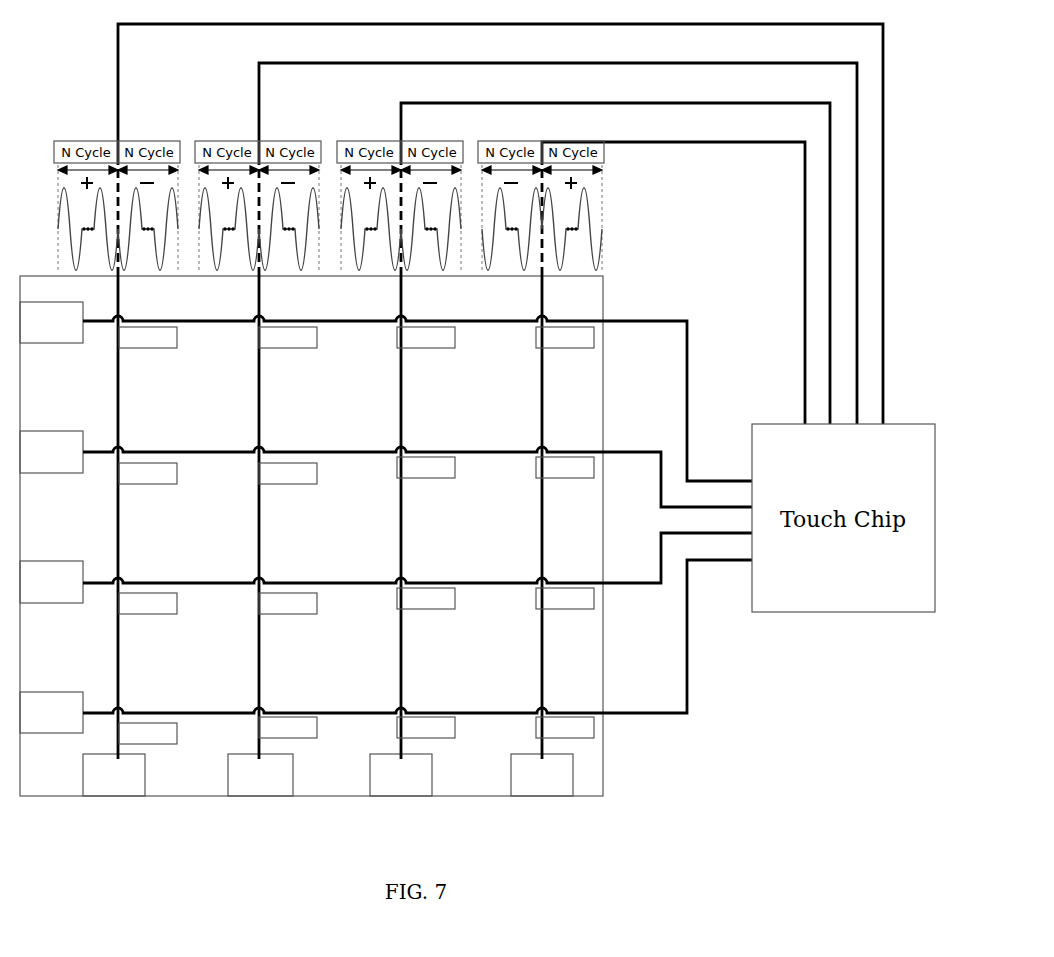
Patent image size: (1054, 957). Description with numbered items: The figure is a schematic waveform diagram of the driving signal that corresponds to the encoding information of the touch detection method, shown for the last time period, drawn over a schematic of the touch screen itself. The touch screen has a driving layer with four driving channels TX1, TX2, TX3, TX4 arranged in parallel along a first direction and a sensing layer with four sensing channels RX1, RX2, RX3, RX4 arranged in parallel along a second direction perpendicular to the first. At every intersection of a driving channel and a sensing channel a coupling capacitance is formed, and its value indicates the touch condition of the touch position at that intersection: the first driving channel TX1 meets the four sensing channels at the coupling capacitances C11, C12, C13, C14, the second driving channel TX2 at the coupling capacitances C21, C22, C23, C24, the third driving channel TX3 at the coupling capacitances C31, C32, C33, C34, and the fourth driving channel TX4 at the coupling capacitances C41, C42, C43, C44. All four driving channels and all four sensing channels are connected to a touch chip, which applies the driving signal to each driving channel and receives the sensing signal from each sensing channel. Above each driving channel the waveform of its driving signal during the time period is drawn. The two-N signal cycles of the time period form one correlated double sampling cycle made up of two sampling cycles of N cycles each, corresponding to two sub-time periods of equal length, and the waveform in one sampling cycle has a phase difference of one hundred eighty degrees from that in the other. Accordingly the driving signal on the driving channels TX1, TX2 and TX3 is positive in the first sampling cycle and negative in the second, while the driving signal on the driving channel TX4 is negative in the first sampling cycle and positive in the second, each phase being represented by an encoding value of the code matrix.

The sensing channel RX1 is at (386, 646).
The sensing channel RX2 is at (386, 568).
The sensing channel RX3 is at (386, 469).
The sensing channel RX4 is at (386, 391).
The driving channel TX1 is at (483, 410).
The driving channel TX2 is at (542, 429).
The driving channel TX3 is at (600, 449).
The driving channel TX4 is at (658, 469).
The coupling capacitance C11 is at (148, 337).
The coupling capacitance C21 is at (288, 337).
The coupling capacitance C31 is at (426, 337).
The coupling capacitance C41 is at (565, 337).
The coupling capacitance C12 is at (148, 473).
The coupling capacitance C22 is at (288, 473).
The coupling capacitance C32 is at (426, 467).
The coupling capacitance C42 is at (565, 467).
The coupling capacitance C13 is at (148, 603).
The coupling capacitance C23 is at (288, 603).
The coupling capacitance C33 is at (426, 598).
The coupling capacitance C43 is at (565, 598).
The coupling capacitance C14 is at (148, 733).
The coupling capacitance C24 is at (288, 727).
The coupling capacitance C34 is at (426, 727).
The coupling capacitance C44 is at (565, 727).